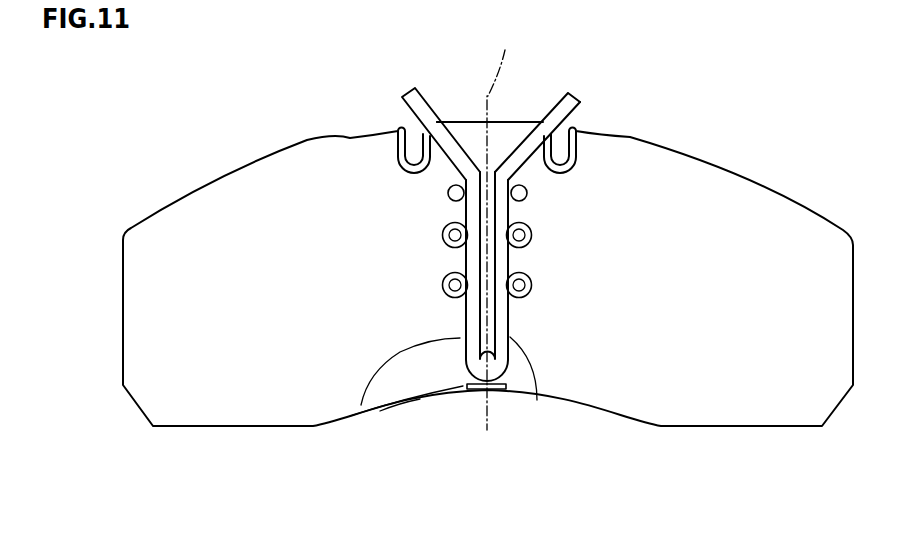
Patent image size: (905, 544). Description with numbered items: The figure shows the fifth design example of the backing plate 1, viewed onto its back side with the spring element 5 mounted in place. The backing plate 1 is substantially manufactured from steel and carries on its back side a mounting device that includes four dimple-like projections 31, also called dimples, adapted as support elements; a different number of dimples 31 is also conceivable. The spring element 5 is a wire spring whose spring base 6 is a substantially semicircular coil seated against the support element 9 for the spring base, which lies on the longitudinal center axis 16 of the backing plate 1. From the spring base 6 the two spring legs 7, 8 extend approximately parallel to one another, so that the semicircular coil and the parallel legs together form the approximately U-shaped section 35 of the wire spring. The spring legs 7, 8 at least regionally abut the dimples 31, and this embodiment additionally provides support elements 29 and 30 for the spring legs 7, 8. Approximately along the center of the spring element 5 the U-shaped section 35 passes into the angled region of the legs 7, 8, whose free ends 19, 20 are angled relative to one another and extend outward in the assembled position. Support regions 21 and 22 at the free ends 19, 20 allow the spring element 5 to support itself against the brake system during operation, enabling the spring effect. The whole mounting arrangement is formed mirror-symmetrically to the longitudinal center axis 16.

The backing plate 1 is at (768, 168).
The spring element 5 is at (481, 78).
The spring base 6 is at (412, 400).
The spring leg 7 is at (537, 400).
The spring leg 8 is at (361, 405).
The support element for the spring base 9 is at (462, 387).
The longitudinal center axis 16 is at (506, 226).
The free end of the spring leg 19 is at (581, 99).
The free end of the spring leg 20 is at (411, 89).
The support region 21 is at (566, 93).
The support region 22 is at (436, 118).
The support element for the spring legs 29 is at (527, 196).
The support element for the spring legs 30 is at (448, 195).
The dimple-like projections 31 is at (443, 283).
The U-shaped section 35 is at (506, 377).